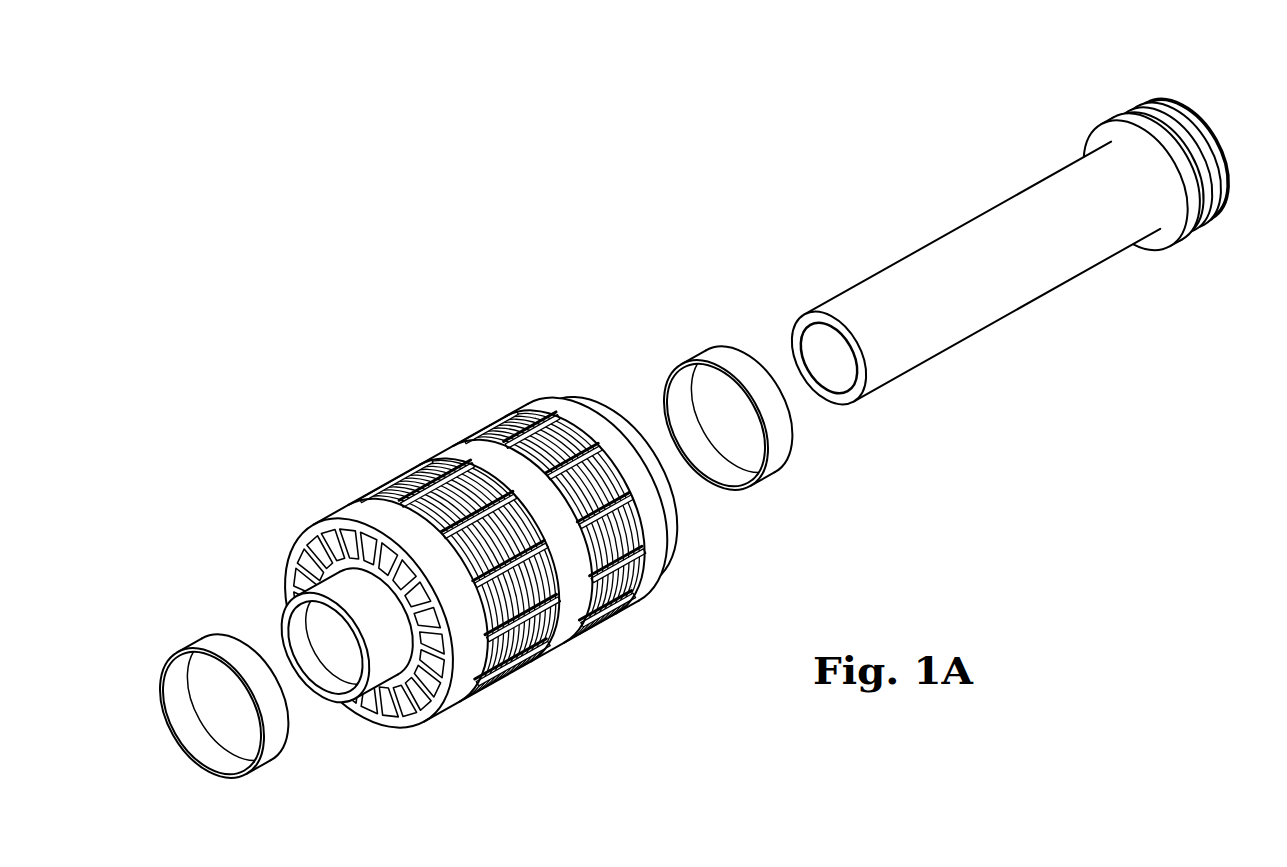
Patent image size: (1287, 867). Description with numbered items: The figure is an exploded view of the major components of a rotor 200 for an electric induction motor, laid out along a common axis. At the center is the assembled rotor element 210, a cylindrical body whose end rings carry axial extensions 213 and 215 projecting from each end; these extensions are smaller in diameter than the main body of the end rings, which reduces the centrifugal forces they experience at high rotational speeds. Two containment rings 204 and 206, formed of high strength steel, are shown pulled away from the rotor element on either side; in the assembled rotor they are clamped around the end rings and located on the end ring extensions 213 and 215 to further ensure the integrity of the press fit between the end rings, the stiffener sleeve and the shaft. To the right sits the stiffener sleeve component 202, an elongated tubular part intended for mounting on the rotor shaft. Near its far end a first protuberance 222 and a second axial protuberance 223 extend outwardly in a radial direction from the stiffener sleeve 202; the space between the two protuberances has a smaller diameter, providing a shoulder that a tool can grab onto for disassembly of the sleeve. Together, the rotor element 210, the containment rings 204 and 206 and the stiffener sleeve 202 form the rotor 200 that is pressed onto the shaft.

The rotor 200 is at (437, 306).
The stiffener sleeve component 202 is at (1040, 163).
The containment ring 204 is at (703, 352).
The containment ring 206 is at (196, 650).
The assembled rotor element 210 is at (553, 356).
The axial extension 213 is at (340, 694).
The axial extension 215 is at (668, 497).
The first protuberance 222 is at (1218, 212).
The second axial protuberance 223 is at (1112, 118).